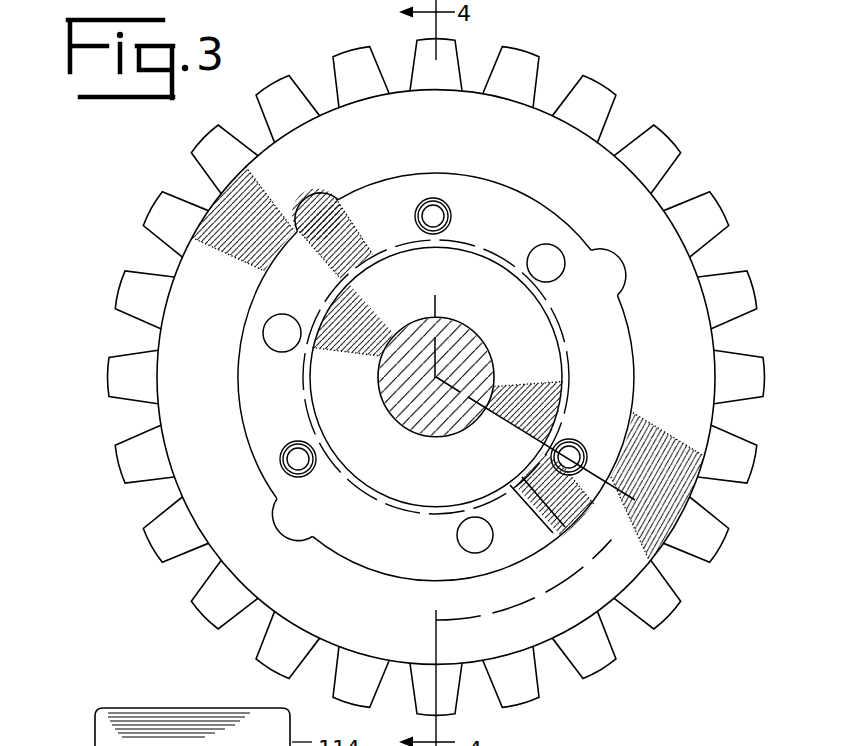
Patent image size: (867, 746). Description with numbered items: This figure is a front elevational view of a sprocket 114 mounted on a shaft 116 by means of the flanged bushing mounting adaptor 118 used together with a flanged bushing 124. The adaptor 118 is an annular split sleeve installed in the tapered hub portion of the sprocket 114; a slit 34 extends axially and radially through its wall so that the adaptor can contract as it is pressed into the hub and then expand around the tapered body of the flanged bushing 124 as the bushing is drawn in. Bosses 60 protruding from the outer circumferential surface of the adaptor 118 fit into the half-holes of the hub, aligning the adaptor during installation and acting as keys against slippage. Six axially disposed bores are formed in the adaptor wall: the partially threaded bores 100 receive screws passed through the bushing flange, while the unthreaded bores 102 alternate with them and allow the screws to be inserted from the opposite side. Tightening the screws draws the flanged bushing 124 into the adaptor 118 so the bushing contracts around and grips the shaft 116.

The sprocket 114 is at (747, 521).
The adaptor 118 is at (262, 384).
The bosses 60 is at (316, 198).
The threaded bores 100 is at (450, 219).
The unthreaded bores 102 is at (559, 281).
The shaft 116 is at (466, 343).
The flanged bushing 124 is at (556, 367).
The slit 34 is at (552, 533).